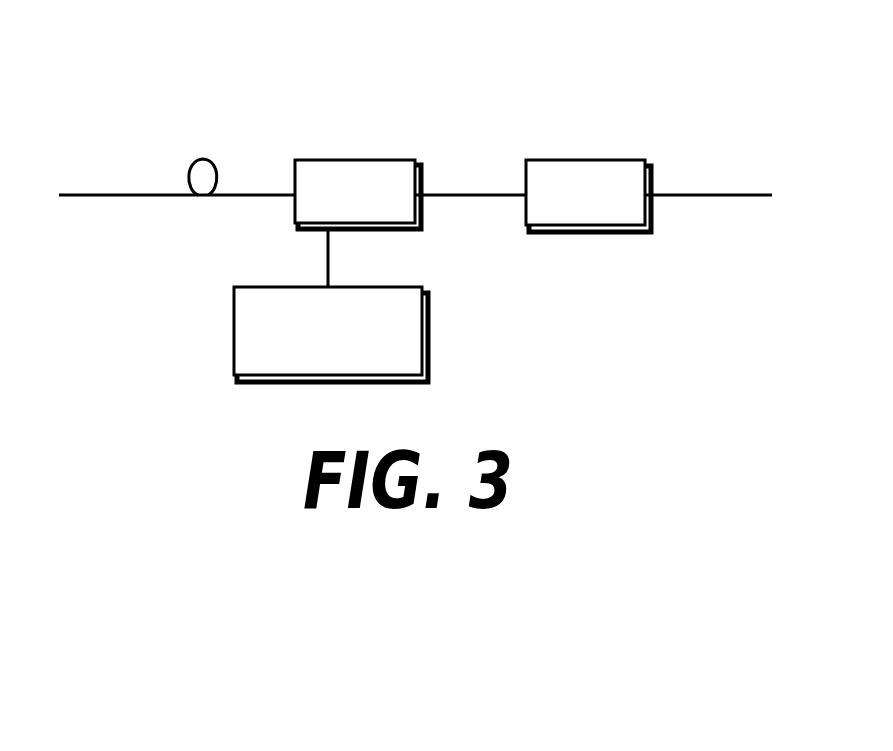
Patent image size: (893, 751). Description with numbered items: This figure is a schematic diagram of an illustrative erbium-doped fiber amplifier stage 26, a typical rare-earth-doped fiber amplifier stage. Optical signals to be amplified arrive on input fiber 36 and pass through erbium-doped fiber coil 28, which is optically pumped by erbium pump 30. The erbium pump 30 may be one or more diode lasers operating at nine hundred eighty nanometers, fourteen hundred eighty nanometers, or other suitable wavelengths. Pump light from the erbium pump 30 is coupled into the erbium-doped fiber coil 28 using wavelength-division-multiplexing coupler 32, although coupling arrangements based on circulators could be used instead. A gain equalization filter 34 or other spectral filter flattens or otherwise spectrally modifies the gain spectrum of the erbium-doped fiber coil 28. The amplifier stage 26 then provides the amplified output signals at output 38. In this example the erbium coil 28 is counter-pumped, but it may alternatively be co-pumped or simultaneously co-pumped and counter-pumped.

The erbium-doped fiber amplifier stage 26 is at (733, 107).
The erbium-doped fiber coil 28 is at (190, 143).
The erbium pump 30 is at (428, 320).
The wavelength-division-multiplexing coupler 32 is at (342, 160).
The gain equalization filter 34 is at (588, 160).
The input fiber 36 is at (133, 195).
The output 38 is at (727, 196).